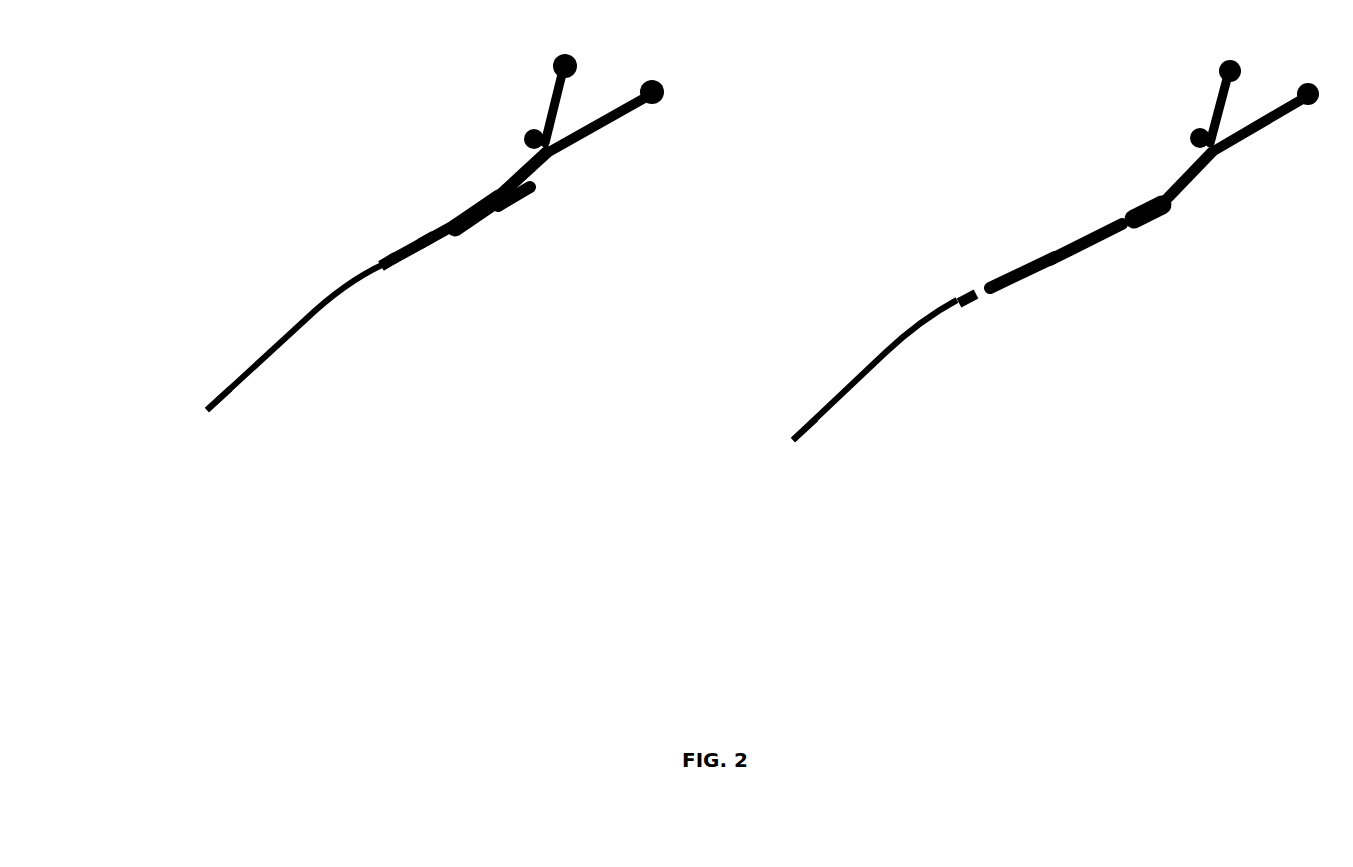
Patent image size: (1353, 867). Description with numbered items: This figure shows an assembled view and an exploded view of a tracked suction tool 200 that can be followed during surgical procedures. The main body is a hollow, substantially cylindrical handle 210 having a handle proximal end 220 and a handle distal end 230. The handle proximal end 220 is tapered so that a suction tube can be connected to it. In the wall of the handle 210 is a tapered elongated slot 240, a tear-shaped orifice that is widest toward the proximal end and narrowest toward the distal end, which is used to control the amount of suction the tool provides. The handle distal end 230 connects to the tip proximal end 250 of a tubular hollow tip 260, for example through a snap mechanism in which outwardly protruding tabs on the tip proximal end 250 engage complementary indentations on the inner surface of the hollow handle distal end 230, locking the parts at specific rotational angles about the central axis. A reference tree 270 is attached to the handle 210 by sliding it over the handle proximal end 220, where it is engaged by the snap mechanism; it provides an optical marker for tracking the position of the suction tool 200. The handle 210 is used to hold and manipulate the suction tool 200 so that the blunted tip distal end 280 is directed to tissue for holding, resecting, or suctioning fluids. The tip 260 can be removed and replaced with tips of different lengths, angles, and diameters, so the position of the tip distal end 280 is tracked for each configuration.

The suction tool 200 is at (307, 98).
The handle 210 is at (435, 223).
The handle proximal end 220 is at (533, 193).
The handle distal end 230 is at (390, 247).
The tapered elongated slot 240 is at (425, 247).
The tip proximal end 250 is at (390, 271).
The tip 260 is at (300, 323).
The reference tree 270 is at (545, 107).
The tip distal end 280 is at (203, 407).